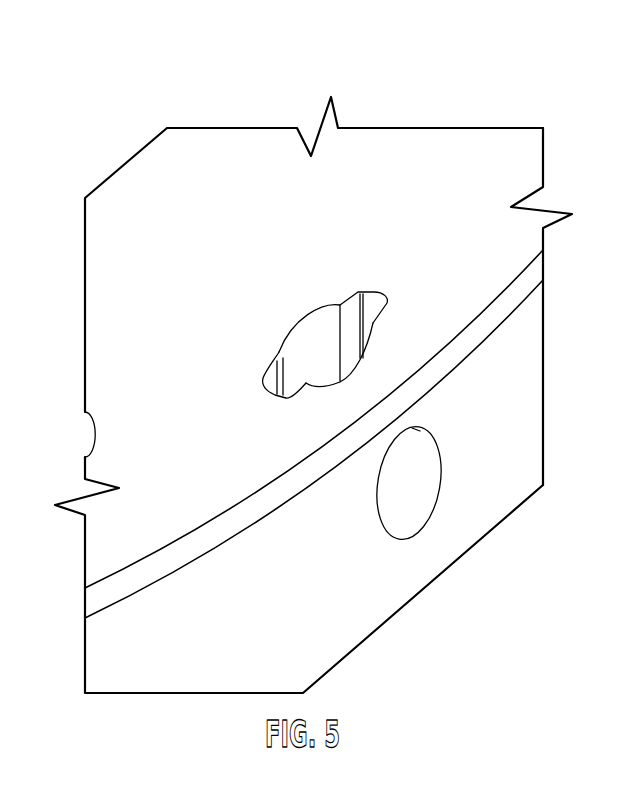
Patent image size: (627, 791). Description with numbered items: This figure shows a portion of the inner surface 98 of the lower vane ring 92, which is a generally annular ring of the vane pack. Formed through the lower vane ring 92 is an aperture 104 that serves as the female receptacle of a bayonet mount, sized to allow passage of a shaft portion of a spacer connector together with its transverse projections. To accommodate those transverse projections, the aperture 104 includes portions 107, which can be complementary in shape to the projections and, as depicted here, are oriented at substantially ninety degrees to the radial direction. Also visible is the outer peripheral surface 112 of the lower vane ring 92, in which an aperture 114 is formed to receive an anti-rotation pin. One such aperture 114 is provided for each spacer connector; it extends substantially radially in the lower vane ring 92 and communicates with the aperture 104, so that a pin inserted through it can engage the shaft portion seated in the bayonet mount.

The lower vane ring 92 is at (479, 116).
The inner surface 98 is at (507, 160).
The aperture 104 is at (304, 300).
The portions 107 is at (371, 284).
The outer peripheral surface 112 is at (373, 600).
The aperture 114 is at (413, 500).